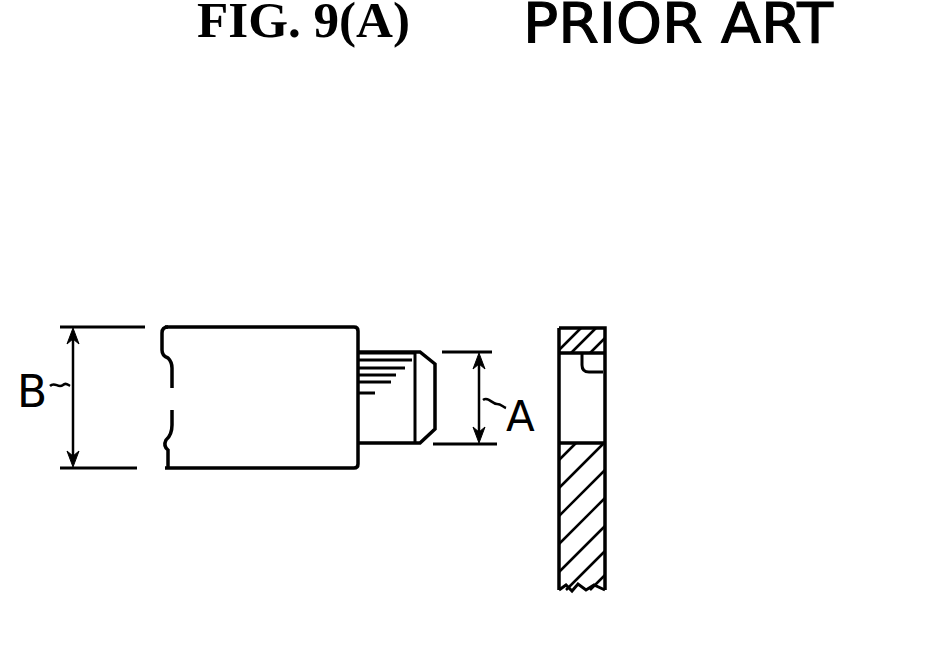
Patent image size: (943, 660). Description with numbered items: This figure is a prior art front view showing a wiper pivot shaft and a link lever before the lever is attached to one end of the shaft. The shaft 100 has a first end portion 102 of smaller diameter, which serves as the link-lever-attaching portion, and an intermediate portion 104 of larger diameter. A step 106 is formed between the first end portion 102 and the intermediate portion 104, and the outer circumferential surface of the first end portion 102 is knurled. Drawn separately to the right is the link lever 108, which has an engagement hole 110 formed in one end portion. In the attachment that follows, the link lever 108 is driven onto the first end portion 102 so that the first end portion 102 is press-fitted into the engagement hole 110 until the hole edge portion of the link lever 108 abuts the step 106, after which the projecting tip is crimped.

The shaft 100 is at (251, 335).
The first end portion 102 is at (405, 350).
The intermediate portion 104 is at (199, 326).
The step 106 is at (363, 332).
The link lever 108 is at (605, 481).
The engagement hole 110 is at (603, 372).